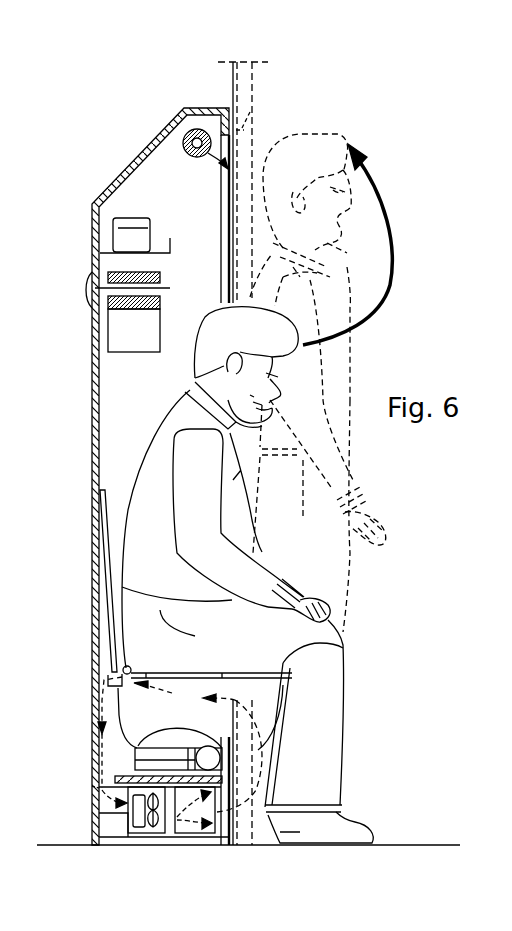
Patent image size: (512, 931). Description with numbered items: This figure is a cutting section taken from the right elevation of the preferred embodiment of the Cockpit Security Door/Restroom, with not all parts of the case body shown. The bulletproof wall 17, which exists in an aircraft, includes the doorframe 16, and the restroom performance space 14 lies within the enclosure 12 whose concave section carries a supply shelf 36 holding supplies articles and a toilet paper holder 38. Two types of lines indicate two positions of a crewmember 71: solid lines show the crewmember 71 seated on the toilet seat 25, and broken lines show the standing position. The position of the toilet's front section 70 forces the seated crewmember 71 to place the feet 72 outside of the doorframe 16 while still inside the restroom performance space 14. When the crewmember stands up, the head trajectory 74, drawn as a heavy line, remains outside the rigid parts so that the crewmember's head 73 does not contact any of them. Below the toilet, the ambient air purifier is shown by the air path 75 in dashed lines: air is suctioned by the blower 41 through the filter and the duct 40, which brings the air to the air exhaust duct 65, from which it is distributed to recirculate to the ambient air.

The enclosure 12 is at (133, 146).
The restroom performance space 14 is at (410, 843).
The doorframe 16 is at (254, 103).
The bulletproof wall 17 is at (228, 84).
The toilet seat 25 is at (342, 644).
The supply shelf 36 is at (156, 248).
The toilet paper holder 38 is at (172, 285).
The duct 40 is at (107, 753).
The blower 41 is at (141, 818).
The air exhaust duct 65 is at (205, 832).
The toilet's front section 70 is at (268, 693).
The crewmember 71 is at (265, 652).
The feet 72 is at (339, 841).
The crewmember's head 73 is at (347, 138).
The head trajectory 74 is at (397, 230).
The air path 75 is at (90, 788).